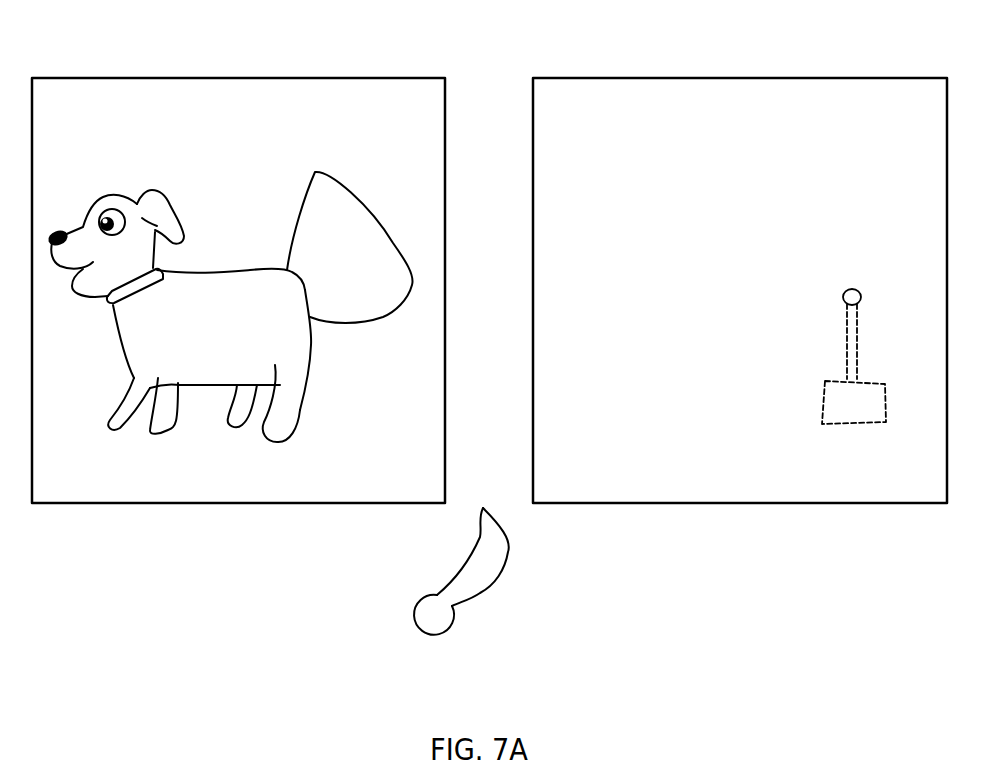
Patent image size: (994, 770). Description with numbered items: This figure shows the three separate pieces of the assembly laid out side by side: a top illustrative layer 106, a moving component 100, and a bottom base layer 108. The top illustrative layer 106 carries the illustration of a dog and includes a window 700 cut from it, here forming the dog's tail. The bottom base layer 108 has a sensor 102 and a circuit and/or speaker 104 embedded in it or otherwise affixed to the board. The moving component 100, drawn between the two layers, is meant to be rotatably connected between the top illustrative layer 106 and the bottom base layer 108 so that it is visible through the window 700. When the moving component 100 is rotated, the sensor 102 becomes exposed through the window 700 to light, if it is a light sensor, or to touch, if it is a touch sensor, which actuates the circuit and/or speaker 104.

The top illustrative layer 106 is at (206, 100).
The bottom base layer 108 is at (636, 113).
The window 700 is at (360, 228).
The moving component 100 is at (487, 577).
The sensor 102 is at (845, 292).
The circuit and/or speaker 104 is at (835, 408).